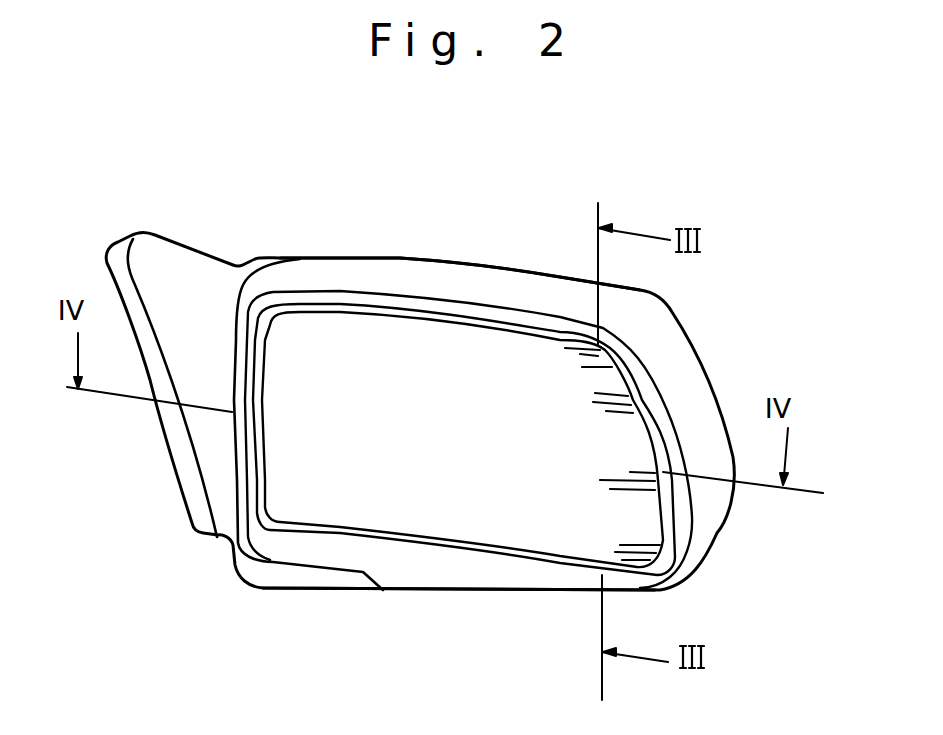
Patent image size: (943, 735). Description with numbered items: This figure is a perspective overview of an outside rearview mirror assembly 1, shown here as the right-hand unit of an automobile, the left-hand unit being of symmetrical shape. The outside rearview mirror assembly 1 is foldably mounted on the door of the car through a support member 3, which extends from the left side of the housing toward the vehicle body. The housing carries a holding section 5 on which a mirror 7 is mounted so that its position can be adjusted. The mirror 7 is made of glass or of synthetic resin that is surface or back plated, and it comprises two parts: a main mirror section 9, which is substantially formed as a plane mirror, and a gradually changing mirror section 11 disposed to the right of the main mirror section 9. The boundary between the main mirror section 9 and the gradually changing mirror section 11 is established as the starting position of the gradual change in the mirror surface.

The outside rearview mirror assembly 1 is at (235, 592).
The support member 3 is at (178, 265).
The holding section 5 is at (463, 278).
The mirror 7 is at (465, 558).
The main mirror section 9 is at (383, 500).
The gradually changing mirror section 11 is at (638, 517).